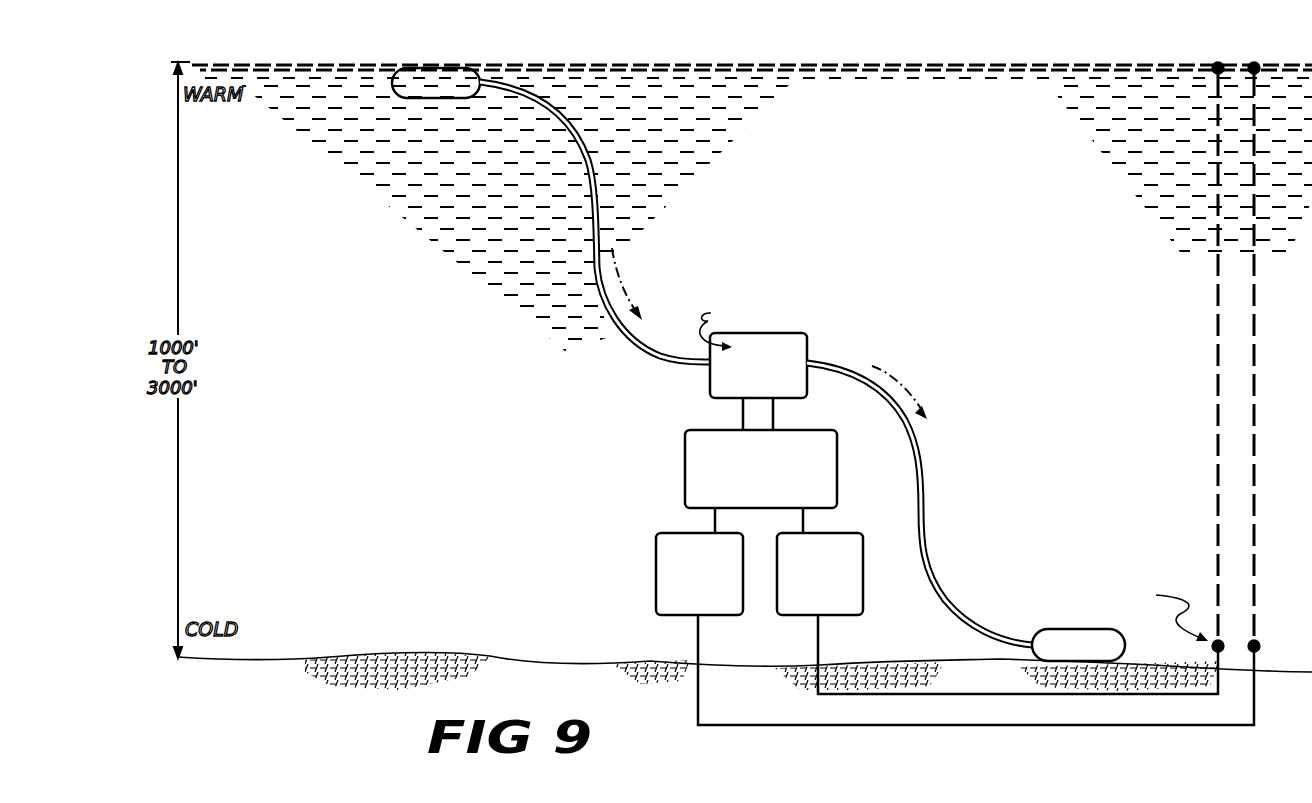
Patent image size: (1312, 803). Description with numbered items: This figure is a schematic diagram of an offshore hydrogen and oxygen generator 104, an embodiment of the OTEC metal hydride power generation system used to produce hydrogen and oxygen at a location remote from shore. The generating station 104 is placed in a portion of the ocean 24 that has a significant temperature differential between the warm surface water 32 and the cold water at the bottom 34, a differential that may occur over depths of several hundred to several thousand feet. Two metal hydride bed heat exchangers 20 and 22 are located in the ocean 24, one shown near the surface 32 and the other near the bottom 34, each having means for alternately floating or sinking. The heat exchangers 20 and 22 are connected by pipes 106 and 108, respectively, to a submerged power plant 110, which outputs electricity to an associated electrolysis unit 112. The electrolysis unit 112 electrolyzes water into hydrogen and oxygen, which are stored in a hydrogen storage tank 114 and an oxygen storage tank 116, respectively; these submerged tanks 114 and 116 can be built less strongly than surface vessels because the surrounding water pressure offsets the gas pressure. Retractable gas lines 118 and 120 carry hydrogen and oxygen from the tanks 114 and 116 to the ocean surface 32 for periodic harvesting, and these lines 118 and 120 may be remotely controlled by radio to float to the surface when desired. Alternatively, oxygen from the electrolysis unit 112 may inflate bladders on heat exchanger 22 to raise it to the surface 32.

The metal hydride bed heat exchanger unit 20 is at (432, 78).
The metal hydride bed heat exchanger unit 22 is at (1038, 632).
The ocean 24 is at (421, 381).
The surface water 32 is at (861, 63).
The bottom 34 is at (463, 656).
The offshore hydrogen and oxygen generator 104 is at (851, 266).
The pipe 106 is at (594, 232).
The pipe 108 is at (928, 497).
The submerged power plant 110 is at (791, 356).
The electrolysis unit 112 is at (688, 470).
The hydrogen storage tank 114 is at (658, 566).
The oxygen storage tank 116 is at (840, 534).
The retractable gas line 118 is at (800, 724).
The retractable gas line 120 is at (937, 690).